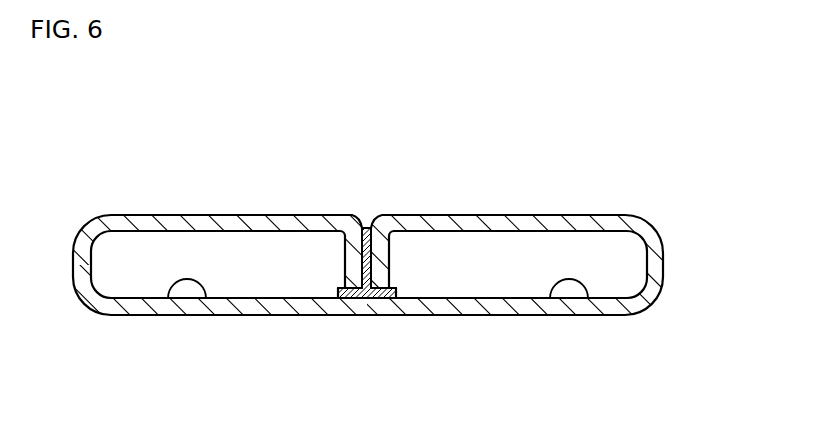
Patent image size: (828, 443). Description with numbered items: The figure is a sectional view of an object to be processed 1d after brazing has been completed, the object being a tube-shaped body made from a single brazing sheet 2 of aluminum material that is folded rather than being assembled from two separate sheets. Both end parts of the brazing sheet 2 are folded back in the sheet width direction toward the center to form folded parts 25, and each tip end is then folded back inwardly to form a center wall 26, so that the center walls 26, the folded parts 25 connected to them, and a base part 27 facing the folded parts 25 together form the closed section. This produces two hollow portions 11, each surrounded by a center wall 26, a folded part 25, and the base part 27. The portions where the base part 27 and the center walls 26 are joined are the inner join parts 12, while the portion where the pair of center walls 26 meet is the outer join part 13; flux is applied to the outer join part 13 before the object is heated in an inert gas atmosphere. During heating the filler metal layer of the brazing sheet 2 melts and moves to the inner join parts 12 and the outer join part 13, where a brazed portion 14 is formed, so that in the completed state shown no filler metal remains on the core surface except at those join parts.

The object to be processed 1d is at (557, 139).
The brazing sheet 2 is at (602, 211).
The hollow portion 11 is at (173, 289).
The inner join part 12 is at (336, 288).
The outer join part 13 is at (367, 226).
The brazed portion 14 is at (369, 290).
The folded part 25 is at (220, 223).
The center wall 26 is at (355, 243).
The base part 27 is at (243, 303).